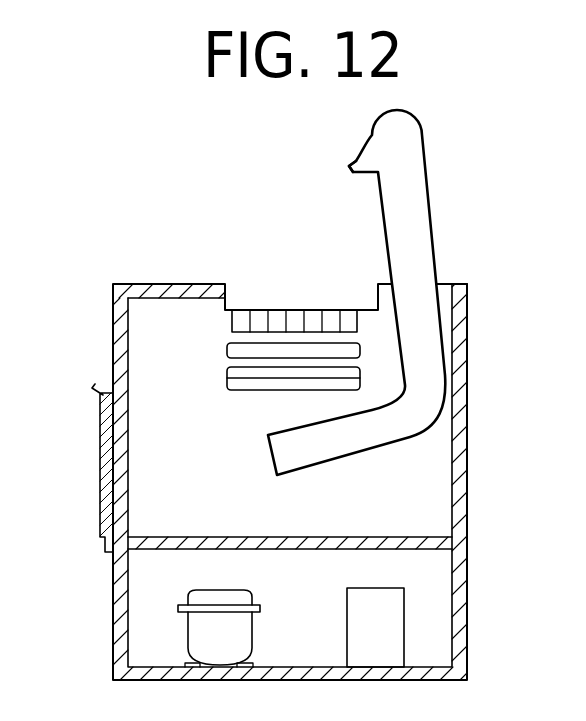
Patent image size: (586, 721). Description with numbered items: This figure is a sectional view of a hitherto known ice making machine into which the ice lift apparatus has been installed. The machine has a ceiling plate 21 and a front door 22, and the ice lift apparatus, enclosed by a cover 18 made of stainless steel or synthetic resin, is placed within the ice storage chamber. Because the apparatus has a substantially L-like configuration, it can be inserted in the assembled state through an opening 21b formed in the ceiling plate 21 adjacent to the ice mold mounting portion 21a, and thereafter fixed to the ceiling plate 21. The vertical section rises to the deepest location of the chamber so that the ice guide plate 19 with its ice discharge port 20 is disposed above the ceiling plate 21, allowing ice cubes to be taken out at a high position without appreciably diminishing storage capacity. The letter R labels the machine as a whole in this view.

The cover 18 is at (395, 292).
The ice guide plate 19 is at (388, 232).
The ice discharge port 20 is at (352, 165).
The ceiling plate 21 is at (164, 284).
The ice mold mounting portion 21a is at (297, 310).
The opening 21b is at (440, 283).
The front door 22 is at (100, 478).
The refrigerator R is at (279, 395).